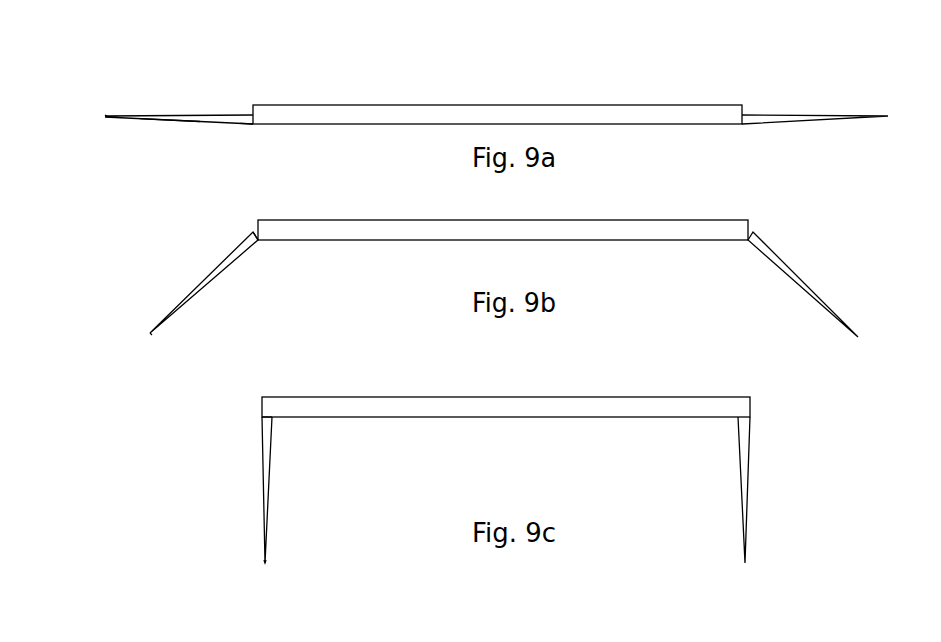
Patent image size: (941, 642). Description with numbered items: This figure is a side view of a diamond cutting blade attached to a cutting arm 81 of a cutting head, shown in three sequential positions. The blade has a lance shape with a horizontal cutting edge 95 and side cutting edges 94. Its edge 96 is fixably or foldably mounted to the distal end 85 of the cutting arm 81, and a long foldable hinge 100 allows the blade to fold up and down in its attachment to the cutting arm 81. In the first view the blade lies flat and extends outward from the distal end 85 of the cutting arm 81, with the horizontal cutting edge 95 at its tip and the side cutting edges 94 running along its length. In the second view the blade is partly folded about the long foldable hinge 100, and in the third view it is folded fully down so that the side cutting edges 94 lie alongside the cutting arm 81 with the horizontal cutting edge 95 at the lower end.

In FIG. 9A, the cutting arm 81 is at (630, 95).
In FIG. 9B, the cutting arm 81 is at (620, 211).
In FIG. 9C, the cutting arm 81 is at (619, 389).
In FIG. 9A, the distal end of cutting arm 85 is at (240, 95).
In FIG. 9A, the side cutting edges 94 is at (161, 132).
In FIG. 9B, the side cutting edges 94 is at (213, 304).
In FIG. 9C, the side cutting edges 94 is at (285, 496).
In FIG. 9A, the horizontal cutting edge 95 is at (95, 103).
In FIG. 9B, the horizontal cutting edge 95 is at (160, 351).
In FIG. 9C, the horizontal cutting edge 95 is at (283, 571).
In FIG. 9A, the edge 96 is at (240, 138).
In FIG. 9B, the long foldable hinge 100 is at (272, 254).
In FIG. 9C, the long foldable hinge 100 is at (288, 425).